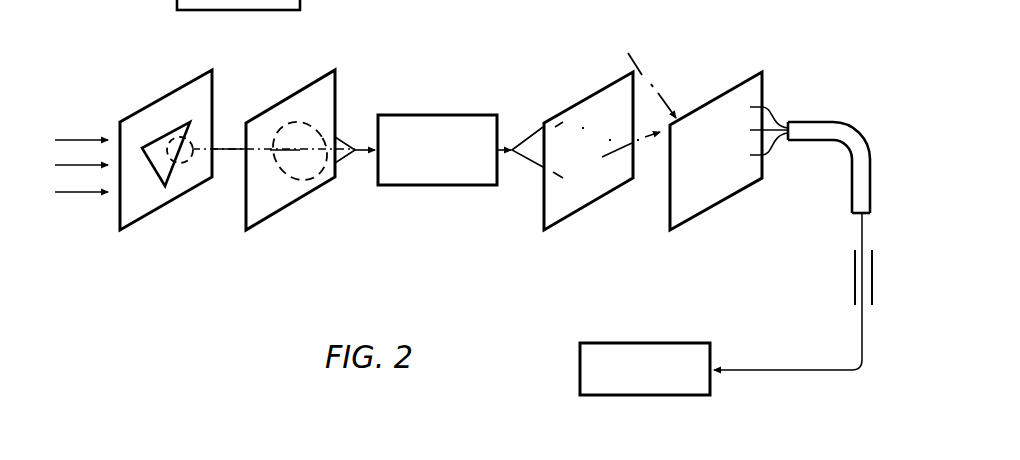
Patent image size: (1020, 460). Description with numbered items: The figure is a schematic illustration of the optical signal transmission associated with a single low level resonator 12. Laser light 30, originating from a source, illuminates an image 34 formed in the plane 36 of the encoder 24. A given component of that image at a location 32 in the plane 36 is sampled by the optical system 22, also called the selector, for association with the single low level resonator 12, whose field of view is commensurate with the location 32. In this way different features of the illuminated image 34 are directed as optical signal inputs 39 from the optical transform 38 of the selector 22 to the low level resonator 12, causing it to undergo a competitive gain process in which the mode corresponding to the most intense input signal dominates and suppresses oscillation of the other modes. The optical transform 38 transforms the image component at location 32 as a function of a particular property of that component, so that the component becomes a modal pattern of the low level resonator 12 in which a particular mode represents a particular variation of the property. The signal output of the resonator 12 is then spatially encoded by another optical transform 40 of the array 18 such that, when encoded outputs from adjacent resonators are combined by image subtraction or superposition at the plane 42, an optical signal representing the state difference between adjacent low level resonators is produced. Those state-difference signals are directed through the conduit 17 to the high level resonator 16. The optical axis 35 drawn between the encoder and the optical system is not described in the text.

The low level resonator 12 is at (440, 115).
The high level resonator 16 is at (652, 336).
The conduit 17 is at (853, 280).
The array 18 is at (666, 58).
The optical system 22 is at (365, 48).
The encoder 24 is at (103, 218).
The laser light 30 is at (75, 140).
The location 32 is at (193, 148).
The image 34 is at (186, 140).
The optical axis 35 is at (227, 150).
The plane 36 is at (138, 205).
The optical transform 38 is at (268, 203).
The optical signal input 39 is at (356, 146).
The optical transform 40 is at (557, 205).
The plane 42 is at (730, 103).